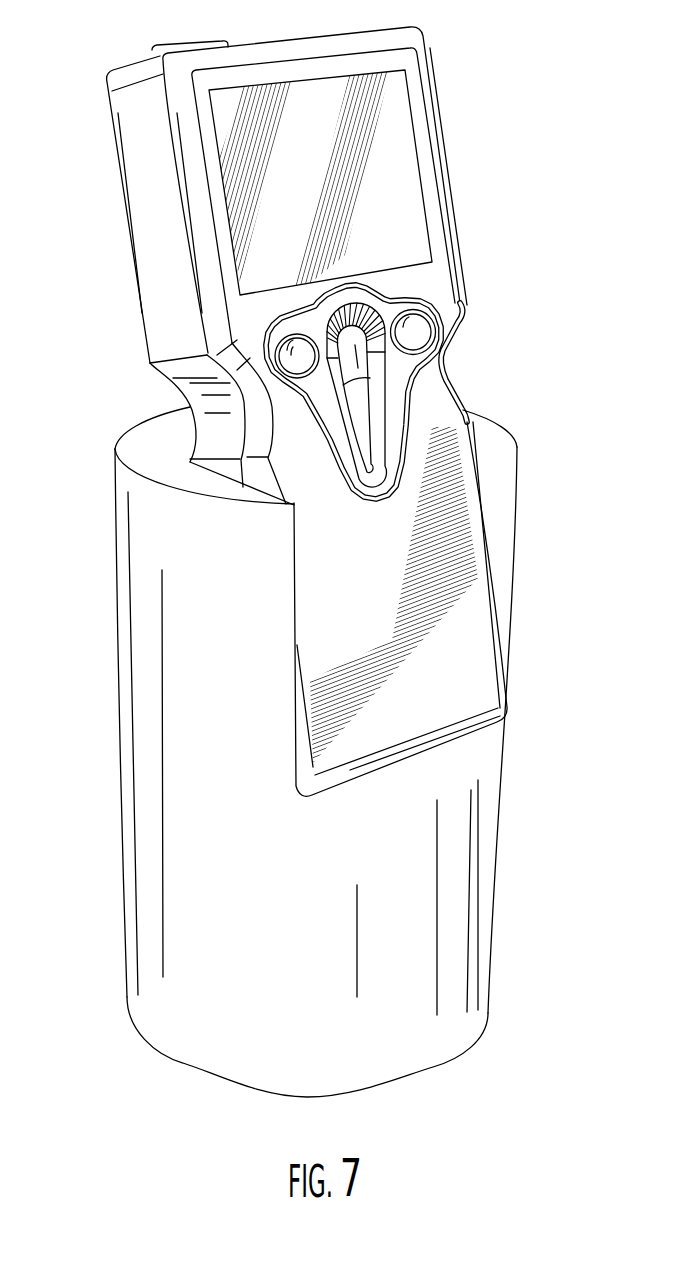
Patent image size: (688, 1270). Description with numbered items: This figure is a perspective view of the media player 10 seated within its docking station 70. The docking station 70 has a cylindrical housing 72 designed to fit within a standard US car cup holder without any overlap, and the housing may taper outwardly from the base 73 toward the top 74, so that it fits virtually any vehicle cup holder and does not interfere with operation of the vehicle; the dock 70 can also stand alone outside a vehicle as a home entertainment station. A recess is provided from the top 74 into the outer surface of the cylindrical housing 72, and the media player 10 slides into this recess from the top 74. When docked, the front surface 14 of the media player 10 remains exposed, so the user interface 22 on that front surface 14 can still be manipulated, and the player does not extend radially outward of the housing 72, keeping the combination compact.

The media player 10 is at (153, 239).
The front surface 14 is at (447, 548).
The ergonomic user interface 22 is at (400, 384).
The docking station 70 is at (128, 1045).
The cylindrical housing 72 is at (127, 862).
The base 73 is at (283, 1088).
The top 74 is at (142, 450).